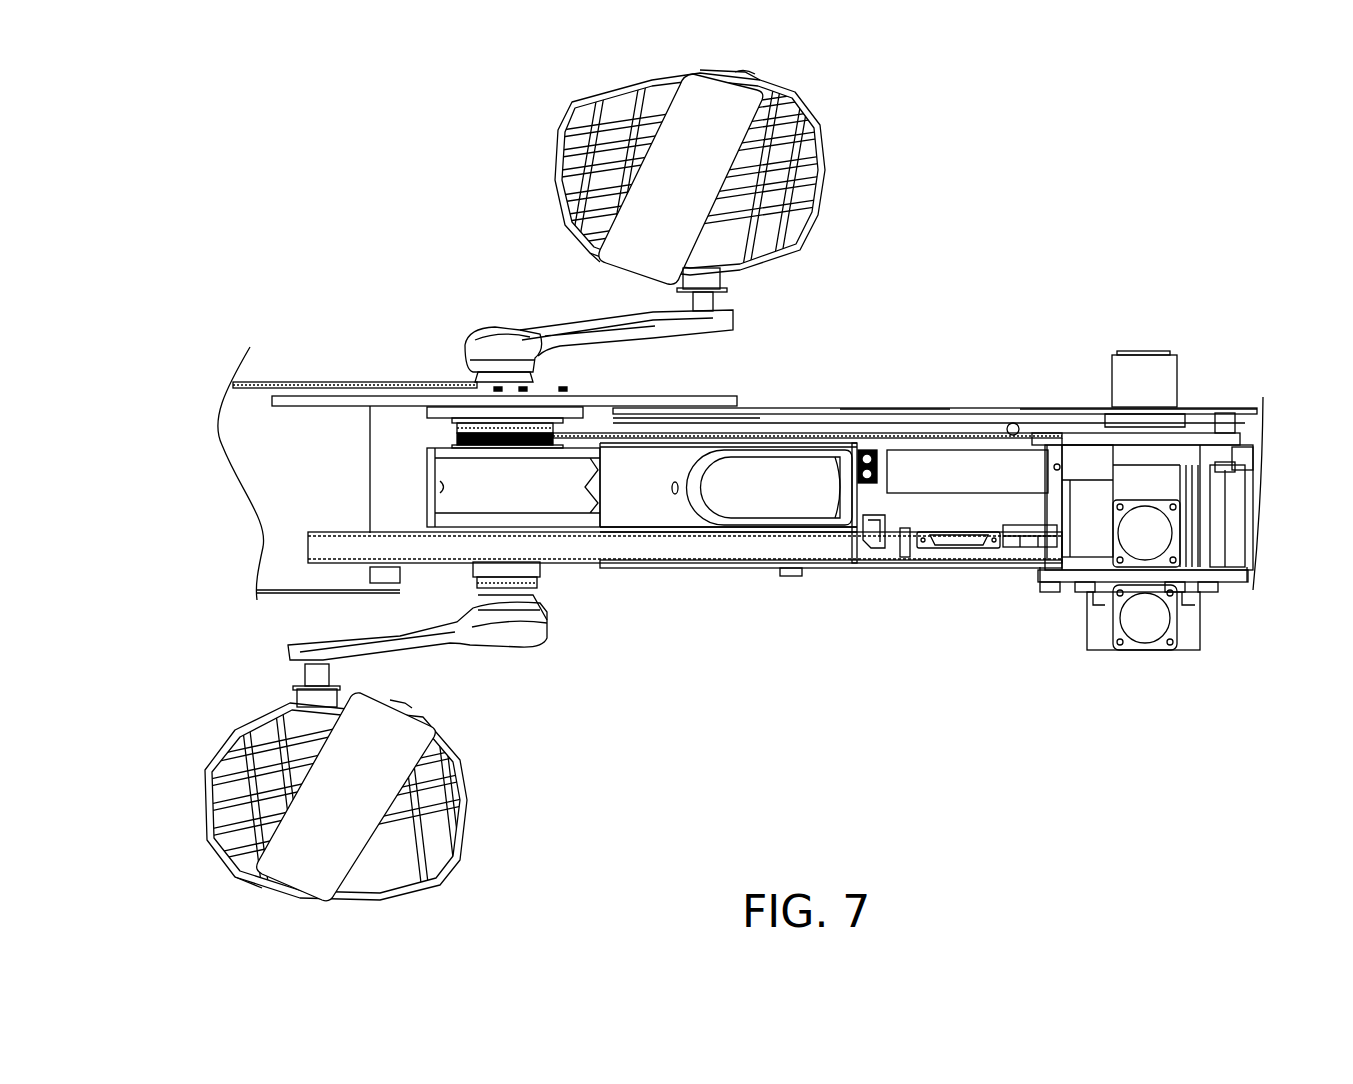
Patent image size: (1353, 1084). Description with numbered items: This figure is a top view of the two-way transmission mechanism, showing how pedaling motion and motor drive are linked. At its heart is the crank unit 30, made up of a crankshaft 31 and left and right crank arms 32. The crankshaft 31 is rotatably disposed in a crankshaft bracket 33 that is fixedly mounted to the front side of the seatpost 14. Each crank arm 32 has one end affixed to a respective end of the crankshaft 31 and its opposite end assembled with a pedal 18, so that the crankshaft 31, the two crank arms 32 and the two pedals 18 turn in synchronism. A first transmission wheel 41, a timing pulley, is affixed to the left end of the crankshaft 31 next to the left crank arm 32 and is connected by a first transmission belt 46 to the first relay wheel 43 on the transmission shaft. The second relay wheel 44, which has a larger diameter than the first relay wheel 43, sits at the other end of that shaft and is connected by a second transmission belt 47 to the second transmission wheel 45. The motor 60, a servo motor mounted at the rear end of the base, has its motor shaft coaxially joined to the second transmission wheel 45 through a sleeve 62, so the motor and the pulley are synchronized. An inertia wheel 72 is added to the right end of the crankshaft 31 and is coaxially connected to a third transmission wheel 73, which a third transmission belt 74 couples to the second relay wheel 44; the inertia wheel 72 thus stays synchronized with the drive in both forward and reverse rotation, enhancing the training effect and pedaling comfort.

The seatpost 14 is at (627, 497).
The pedal 18 is at (570, 105).
The crank unit 30 is at (468, 316).
The crankshaft 31 is at (506, 380).
The crank arm 32 is at (567, 328).
The crankshaft bracket 33 is at (462, 493).
The first transmission wheel 41 is at (328, 575).
The first relay wheel 43 is at (762, 571).
The second relay wheel 44 is at (965, 391).
The second transmission wheel 45 is at (1189, 380).
The first transmission belt 46 is at (690, 549).
The second transmission belt 47 is at (888, 420).
The motor 60 is at (1107, 664).
The sleeve 62 is at (1130, 375).
The inertia wheel 72 is at (307, 398).
The third transmission wheel 73 is at (432, 433).
The third transmission belt 74 is at (800, 437).